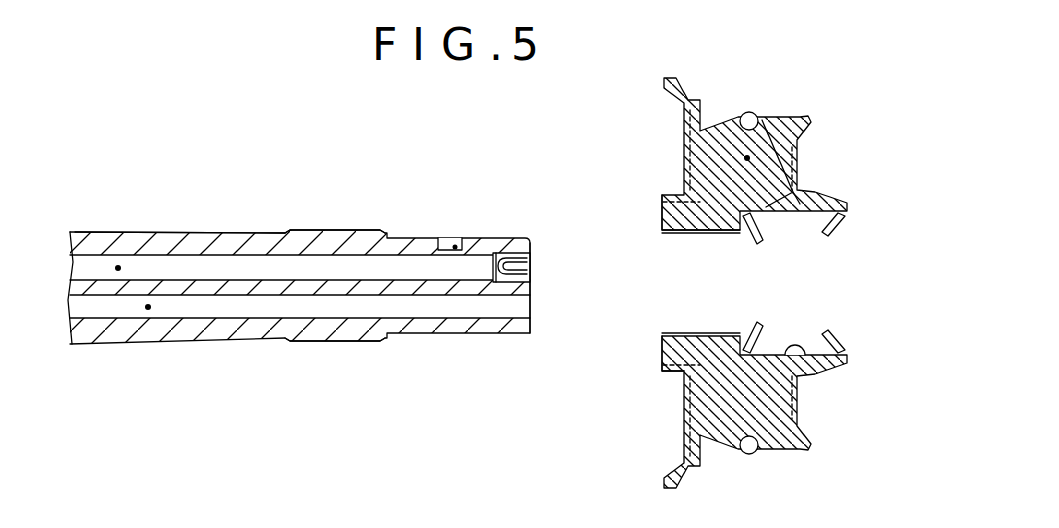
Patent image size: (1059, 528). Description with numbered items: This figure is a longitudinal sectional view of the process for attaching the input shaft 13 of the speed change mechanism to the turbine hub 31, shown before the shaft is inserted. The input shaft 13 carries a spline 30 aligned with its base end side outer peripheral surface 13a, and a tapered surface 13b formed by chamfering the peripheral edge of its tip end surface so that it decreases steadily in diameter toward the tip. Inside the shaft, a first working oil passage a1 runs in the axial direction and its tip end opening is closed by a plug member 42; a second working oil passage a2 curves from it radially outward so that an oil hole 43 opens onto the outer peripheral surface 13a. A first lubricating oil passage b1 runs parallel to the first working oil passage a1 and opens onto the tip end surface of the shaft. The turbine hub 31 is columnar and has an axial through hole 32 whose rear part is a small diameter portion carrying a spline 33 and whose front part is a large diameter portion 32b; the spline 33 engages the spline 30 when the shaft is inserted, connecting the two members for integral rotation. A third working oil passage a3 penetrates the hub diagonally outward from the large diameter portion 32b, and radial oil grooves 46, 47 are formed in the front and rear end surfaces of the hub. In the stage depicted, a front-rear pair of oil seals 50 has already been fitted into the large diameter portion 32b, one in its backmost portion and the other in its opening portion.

The input shaft 13 is at (165, 240).
The outer peripheral surface 13a is at (236, 232).
The tapered surface 13b is at (527, 338).
The spline 30 is at (327, 231).
The plug member 42 is at (533, 265).
The oil hole 43 is at (470, 240).
The first working oil passage a1 is at (118, 266).
The second working oil passage a2 is at (438, 242).
The third working oil passage a3 is at (746, 158).
The first lubricating oil passage b1 is at (147, 312).
The turbine hub 31 is at (778, 435).
The through hole 32 is at (702, 337).
The large diameter portion 32b is at (836, 357).
The spline 33 is at (703, 235).
The oil grooves 46 is at (800, 162).
The oil grooves 47 is at (683, 157).
The oil seal 50 is at (756, 246).